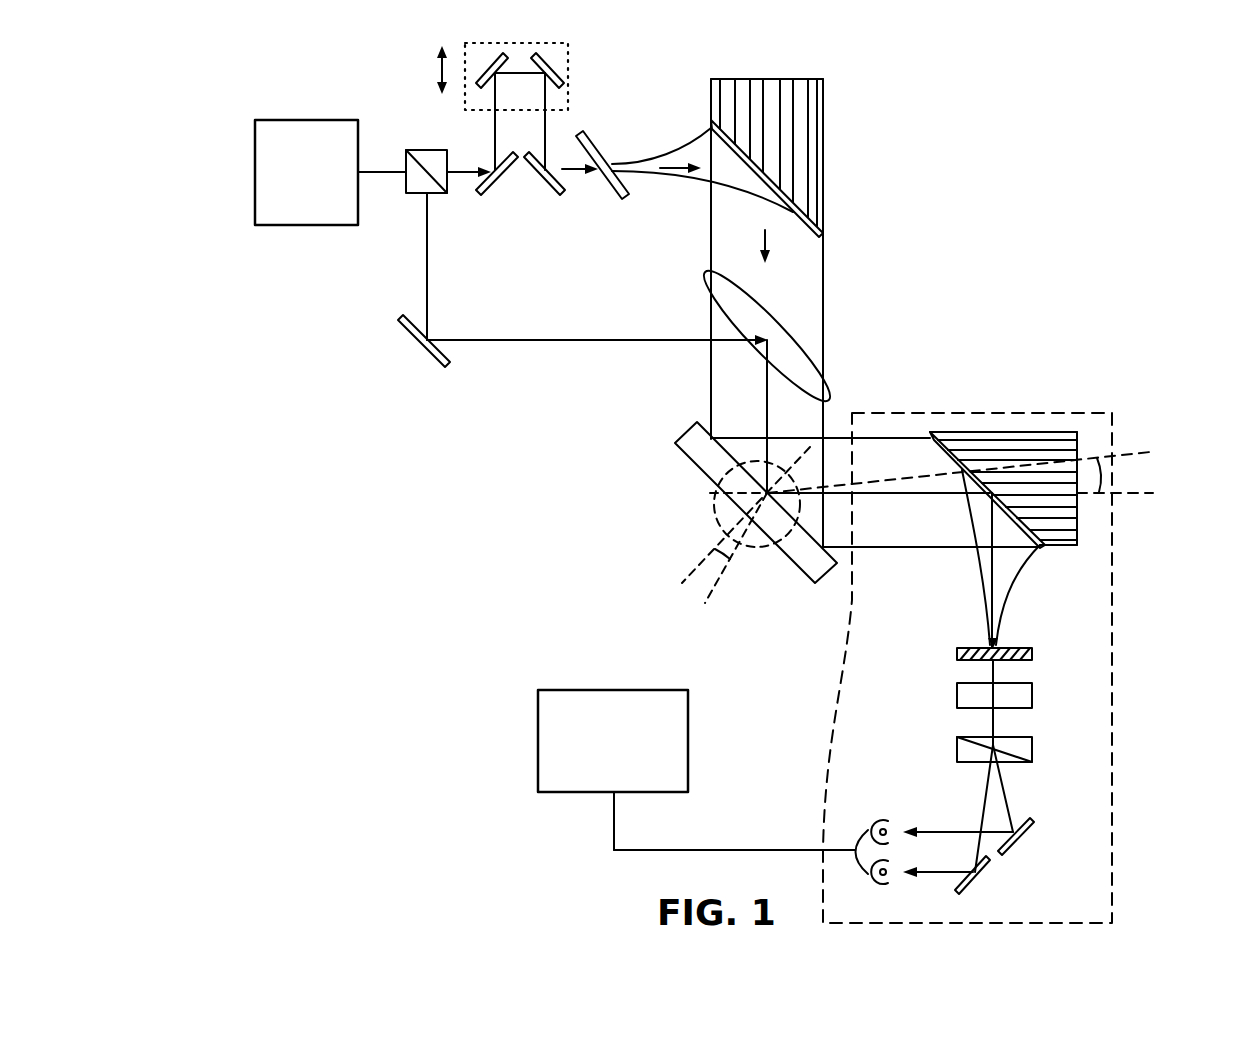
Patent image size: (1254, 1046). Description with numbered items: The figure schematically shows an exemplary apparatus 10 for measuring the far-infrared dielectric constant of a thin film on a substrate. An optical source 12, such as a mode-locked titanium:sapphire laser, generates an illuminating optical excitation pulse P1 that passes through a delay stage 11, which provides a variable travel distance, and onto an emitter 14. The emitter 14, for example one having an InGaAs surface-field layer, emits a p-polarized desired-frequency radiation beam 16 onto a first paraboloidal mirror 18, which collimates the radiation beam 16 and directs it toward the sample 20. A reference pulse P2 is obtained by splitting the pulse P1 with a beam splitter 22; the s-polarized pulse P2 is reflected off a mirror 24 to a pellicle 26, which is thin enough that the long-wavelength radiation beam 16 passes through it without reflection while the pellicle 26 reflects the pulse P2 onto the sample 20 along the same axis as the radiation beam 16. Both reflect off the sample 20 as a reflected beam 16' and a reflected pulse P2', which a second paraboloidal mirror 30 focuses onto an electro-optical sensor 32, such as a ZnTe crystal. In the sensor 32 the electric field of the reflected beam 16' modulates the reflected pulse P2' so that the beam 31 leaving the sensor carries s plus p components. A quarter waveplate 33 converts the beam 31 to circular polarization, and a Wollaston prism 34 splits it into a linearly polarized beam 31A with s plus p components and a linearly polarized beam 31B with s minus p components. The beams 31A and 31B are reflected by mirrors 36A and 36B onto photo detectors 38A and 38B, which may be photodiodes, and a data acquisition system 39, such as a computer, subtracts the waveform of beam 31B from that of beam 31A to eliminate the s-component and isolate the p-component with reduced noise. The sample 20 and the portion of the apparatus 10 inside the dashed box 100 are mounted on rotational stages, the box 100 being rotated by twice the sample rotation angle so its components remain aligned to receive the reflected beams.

The apparatus 10 is at (883, 238).
The delay stage 11 is at (518, 190).
The optical source 12 is at (320, 185).
The emitter 14 is at (600, 158).
The radiation beam 16 is at (702, 183).
The reflected beam 16' is at (932, 457).
The first paraboloidal mirror 18 is at (769, 100).
The sample 20 is at (812, 565).
The beam splitter 22 is at (413, 186).
The mirror 24 is at (429, 349).
The pellicle 26 is at (832, 388).
The second paraboloidal mirror 30 is at (1040, 440).
The beam 31 is at (997, 668).
The linearly polarized beam 31A is at (1010, 803).
The linearly polarized beam 31B is at (980, 805).
The electro-optical sensor 32 is at (1032, 655).
The quarter waveplate 33 is at (1032, 695).
The Wollaston prism 34 is at (1032, 745).
The mirror 36A is at (1020, 838).
The mirror 36B is at (985, 880).
The photo detector 38A is at (877, 820).
The photo detector 38B is at (870, 879).
The data acquisition system 39 is at (626, 753).
The dashed box 100 is at (1110, 572).
The optical excitation pulse P1 is at (378, 172).
The reference pulse P2 is at (599, 305).
The reflected pulse P2' is at (923, 520).